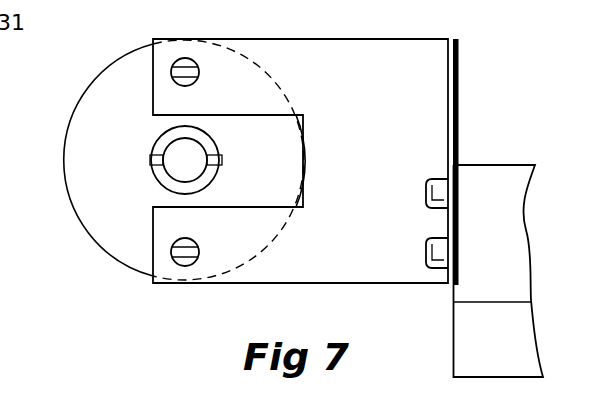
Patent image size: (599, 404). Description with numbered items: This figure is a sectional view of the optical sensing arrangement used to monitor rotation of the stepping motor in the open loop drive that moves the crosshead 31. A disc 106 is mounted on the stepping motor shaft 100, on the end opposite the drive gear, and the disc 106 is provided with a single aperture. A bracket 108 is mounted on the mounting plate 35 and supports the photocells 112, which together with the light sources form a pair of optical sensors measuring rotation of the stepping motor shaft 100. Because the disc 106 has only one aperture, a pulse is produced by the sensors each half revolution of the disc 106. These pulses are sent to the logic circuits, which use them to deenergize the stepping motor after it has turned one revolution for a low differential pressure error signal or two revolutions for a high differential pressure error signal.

The bracket 108 is at (357, 47).
The disc 106 is at (88, 228).
The stepping motor shaft 100 is at (175, 175).
The photocell 112 is at (186, 58).
The crosshead 31 is at (459, 339).
The mounting plate 35 is at (458, 290).